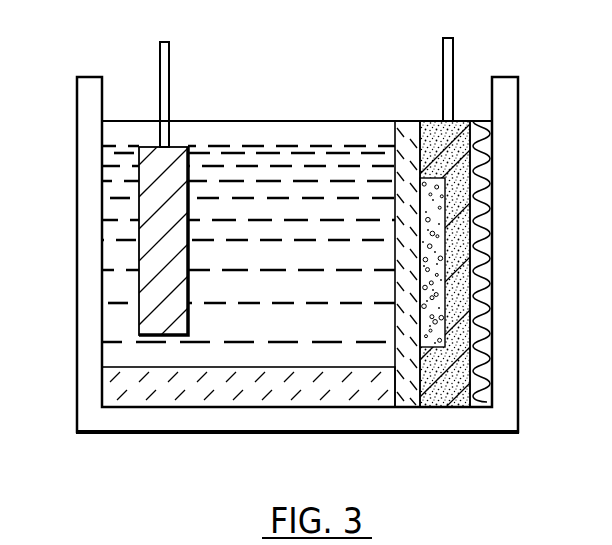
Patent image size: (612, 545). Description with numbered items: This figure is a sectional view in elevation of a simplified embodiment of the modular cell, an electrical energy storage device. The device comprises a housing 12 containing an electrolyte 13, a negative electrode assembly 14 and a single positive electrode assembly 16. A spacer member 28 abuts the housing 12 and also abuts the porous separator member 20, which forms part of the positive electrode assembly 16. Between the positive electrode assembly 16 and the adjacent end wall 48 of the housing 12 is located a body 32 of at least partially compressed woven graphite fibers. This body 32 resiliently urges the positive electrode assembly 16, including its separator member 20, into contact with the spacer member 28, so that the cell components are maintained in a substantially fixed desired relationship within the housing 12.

The housing 12 is at (77, 94).
The electrolyte 13 is at (320, 174).
The negative electrode assembly 14 is at (180, 108).
The positive electrode assembly 16 is at (436, 106).
The porous separator member 20 is at (412, 402).
The spacer member 28 is at (277, 120).
The body of at least partially compressed woven graphite fibers 32 is at (484, 255).
The end wall 48 is at (492, 108).